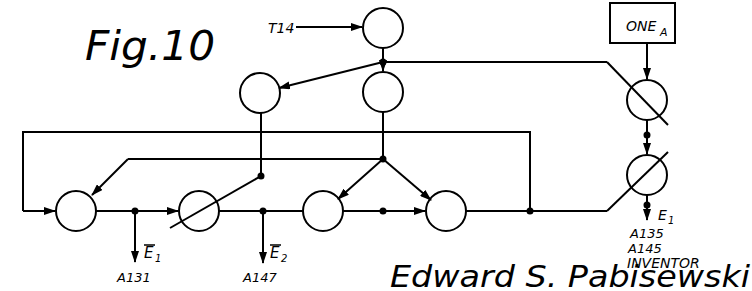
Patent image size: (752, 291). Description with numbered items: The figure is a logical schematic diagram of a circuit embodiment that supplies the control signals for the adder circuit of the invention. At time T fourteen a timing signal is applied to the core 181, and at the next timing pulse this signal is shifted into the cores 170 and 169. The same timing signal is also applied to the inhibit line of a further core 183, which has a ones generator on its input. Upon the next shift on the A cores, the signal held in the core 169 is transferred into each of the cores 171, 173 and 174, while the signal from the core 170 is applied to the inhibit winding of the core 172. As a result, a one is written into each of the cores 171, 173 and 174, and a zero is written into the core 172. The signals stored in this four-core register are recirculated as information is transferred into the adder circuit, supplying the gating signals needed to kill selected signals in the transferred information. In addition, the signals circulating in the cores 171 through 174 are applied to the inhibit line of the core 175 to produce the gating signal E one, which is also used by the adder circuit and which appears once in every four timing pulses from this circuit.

The core A181 181 is at (383, 28).
The core A170 170 is at (260, 93).
The core A169 169 is at (383, 92).
The core A171 171 is at (76, 211).
The core A172 172 is at (199, 211).
The core A173 173 is at (323, 211).
The core A174 174 is at (446, 211).
The core A183 183 is at (647, 100).
The core A175 175 is at (647, 175).